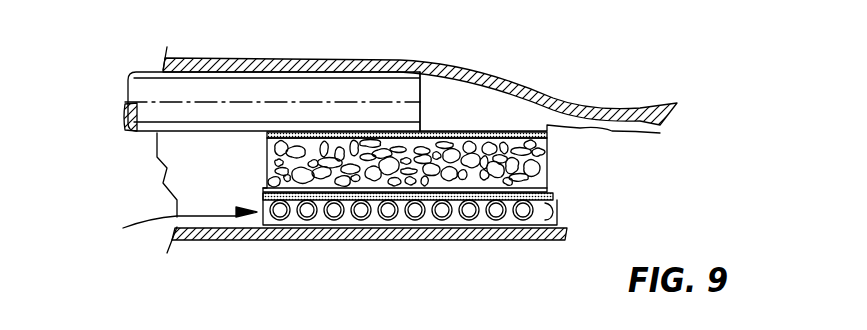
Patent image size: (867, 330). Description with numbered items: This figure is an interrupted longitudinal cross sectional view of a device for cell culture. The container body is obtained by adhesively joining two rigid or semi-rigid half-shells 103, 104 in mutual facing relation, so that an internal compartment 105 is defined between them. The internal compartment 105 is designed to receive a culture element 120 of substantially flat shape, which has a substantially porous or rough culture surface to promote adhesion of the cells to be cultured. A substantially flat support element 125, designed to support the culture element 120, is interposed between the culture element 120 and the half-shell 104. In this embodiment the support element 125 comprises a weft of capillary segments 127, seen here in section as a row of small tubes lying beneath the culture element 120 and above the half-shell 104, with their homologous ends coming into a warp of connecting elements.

The half-shell 103 is at (195, 67).
The internal compartment 105 is at (465, 110).
The culture element 120 is at (547, 160).
The capillary segments 127 is at (342, 222).
The half-shell 104 is at (433, 240).
The support element 125 is at (157, 231).